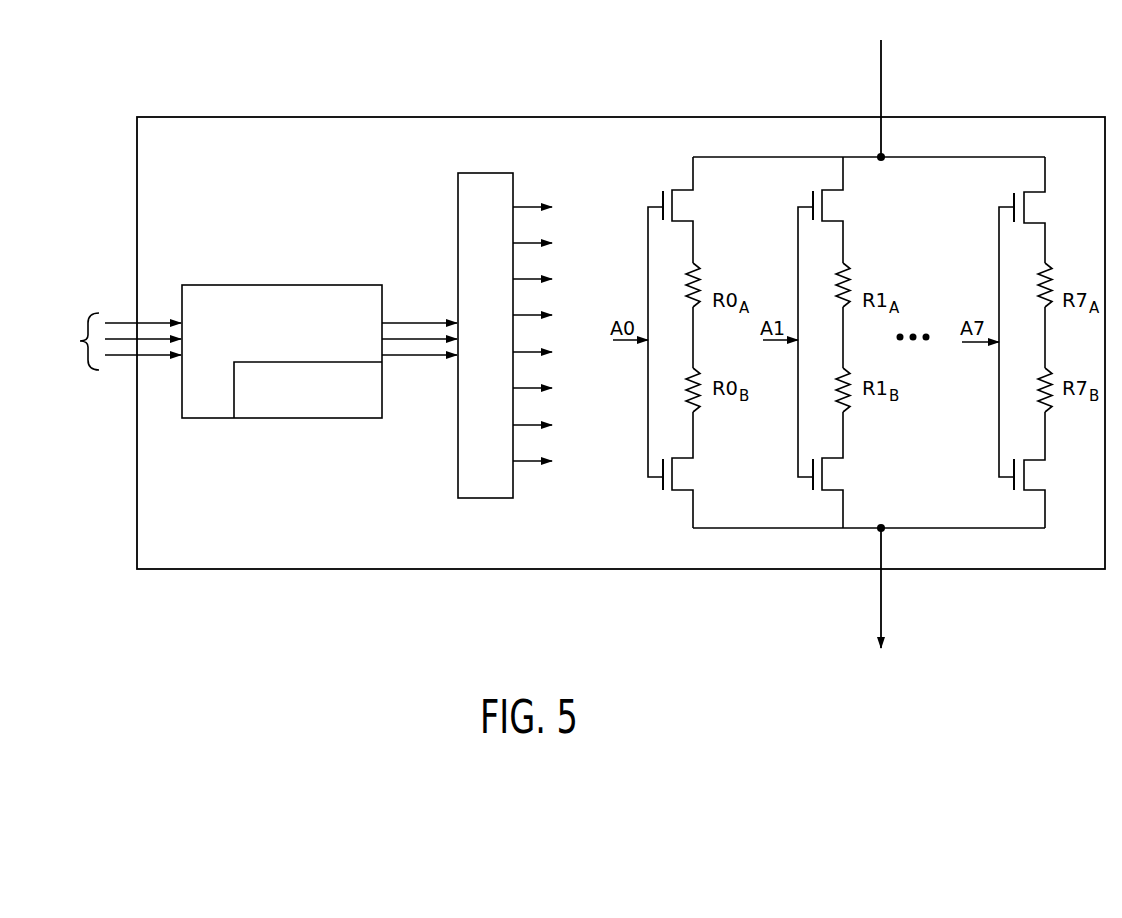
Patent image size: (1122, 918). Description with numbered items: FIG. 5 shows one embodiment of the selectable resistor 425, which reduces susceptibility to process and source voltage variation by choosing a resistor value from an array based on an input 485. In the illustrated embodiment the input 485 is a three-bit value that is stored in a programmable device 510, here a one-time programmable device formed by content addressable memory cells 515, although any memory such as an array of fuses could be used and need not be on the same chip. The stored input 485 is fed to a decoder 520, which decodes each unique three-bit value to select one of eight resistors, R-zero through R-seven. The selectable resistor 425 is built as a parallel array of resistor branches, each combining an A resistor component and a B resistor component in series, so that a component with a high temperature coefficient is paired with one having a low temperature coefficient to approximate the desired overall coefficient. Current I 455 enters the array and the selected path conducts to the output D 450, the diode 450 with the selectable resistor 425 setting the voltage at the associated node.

The selectable resistor 425 is at (422, 156).
The input 485 is at (97, 342).
The programmable device 510 is at (285, 360).
The content addressable memory (CAM) cells 515 is at (330, 407).
The decoder 520 is at (500, 447).
The current I 455 is at (899, 40).
The diode 450 is at (873, 604).